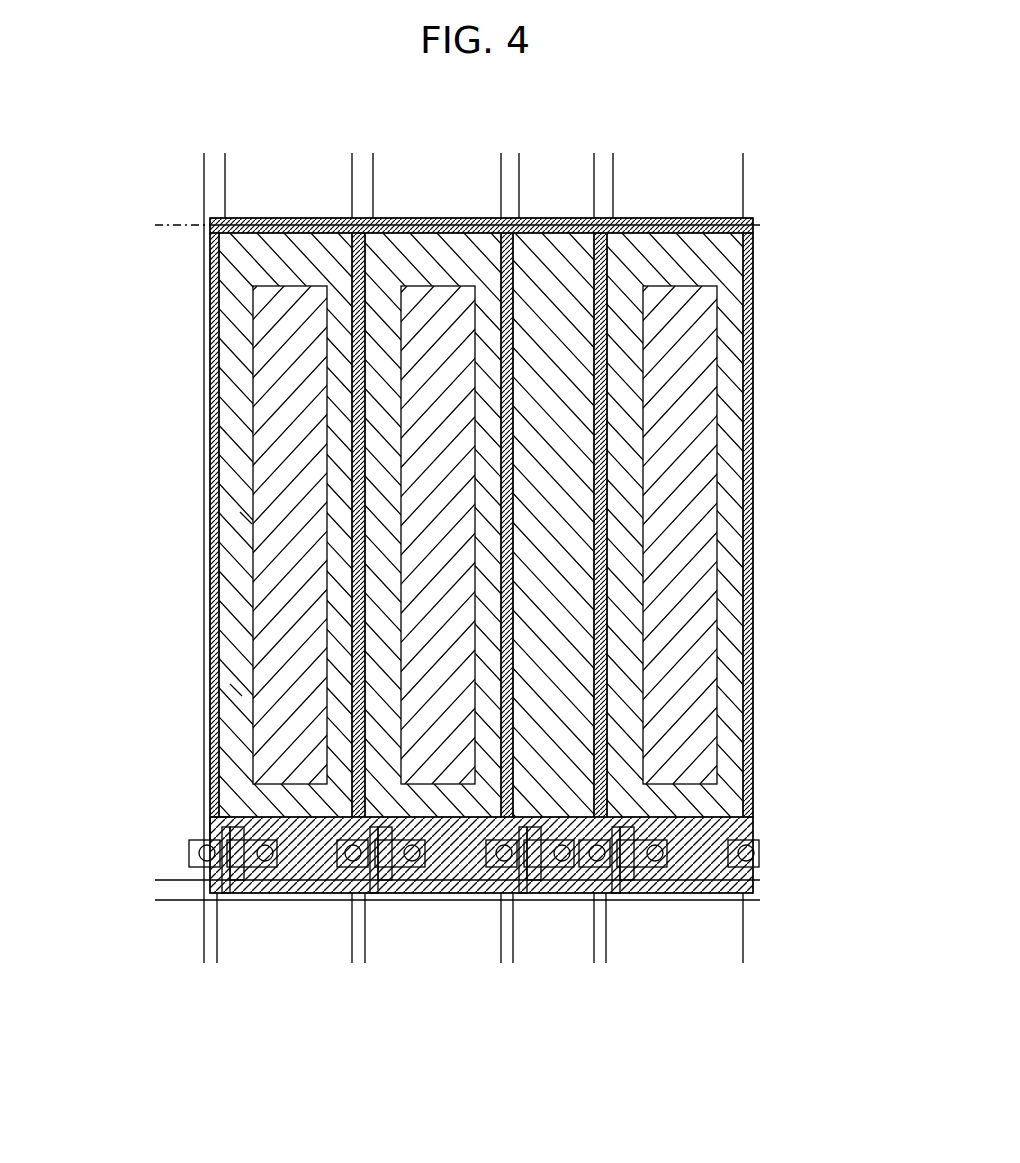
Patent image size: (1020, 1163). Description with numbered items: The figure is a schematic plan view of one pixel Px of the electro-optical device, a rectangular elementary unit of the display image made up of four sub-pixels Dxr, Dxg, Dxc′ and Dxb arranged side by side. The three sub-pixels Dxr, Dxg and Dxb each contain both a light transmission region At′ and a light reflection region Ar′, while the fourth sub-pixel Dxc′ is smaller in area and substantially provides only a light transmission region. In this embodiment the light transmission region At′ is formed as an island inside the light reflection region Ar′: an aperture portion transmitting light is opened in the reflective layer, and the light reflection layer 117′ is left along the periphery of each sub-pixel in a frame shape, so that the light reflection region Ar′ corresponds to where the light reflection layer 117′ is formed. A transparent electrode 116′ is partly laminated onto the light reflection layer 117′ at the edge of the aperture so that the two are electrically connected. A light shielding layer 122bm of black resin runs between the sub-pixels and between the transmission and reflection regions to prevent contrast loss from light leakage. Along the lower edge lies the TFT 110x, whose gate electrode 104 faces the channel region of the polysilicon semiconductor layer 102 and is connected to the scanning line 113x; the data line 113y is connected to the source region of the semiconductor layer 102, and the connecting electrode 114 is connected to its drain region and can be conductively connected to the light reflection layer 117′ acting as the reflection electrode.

The light shielding layer 122bm is at (752, 316).
The data line 113y is at (203, 385).
The scanning line 113x is at (410, 900).
The semiconductor layer 102 is at (197, 868).
The connecting electrode 114 is at (653, 868).
The TFT (switching element) 110x is at (263, 884).
The gate electrode 104 is at (215, 815).
The light reflection layer 117′ is at (247, 518).
The electrode (transparent electrode) 116′ is at (237, 690).
The light transmission region At′ is at (710, 288).
The light reflection region Ar′ is at (725, 728).
The pixel Px is at (138, 186).
The sub-pixel (red) Dxr is at (352, 216).
The sub-pixel (green) Dxg is at (501, 216).
The sub-pixel (fourth) Dxc′ is at (594, 216).
The sub-pixel (blue) Dxb is at (743, 216).